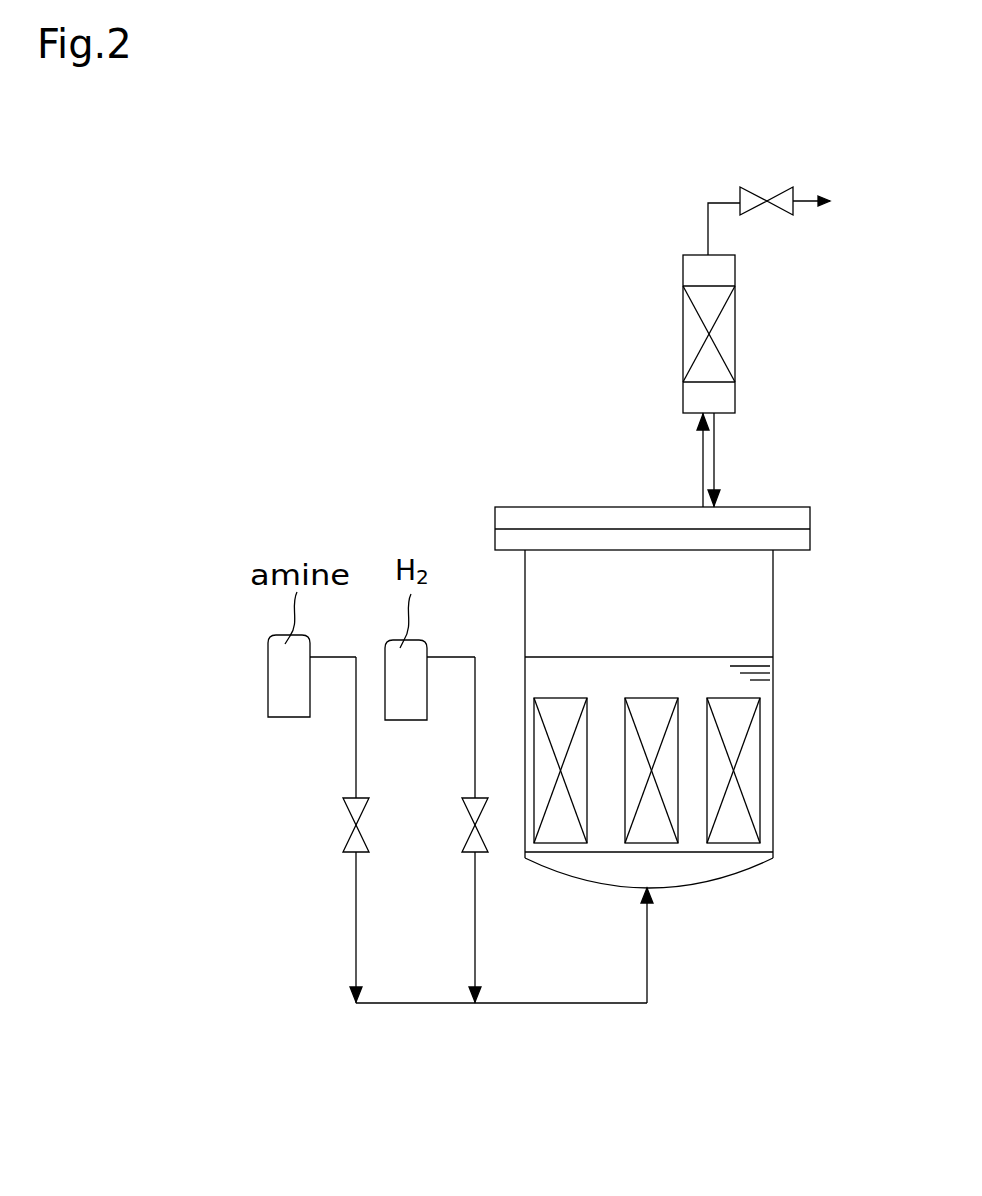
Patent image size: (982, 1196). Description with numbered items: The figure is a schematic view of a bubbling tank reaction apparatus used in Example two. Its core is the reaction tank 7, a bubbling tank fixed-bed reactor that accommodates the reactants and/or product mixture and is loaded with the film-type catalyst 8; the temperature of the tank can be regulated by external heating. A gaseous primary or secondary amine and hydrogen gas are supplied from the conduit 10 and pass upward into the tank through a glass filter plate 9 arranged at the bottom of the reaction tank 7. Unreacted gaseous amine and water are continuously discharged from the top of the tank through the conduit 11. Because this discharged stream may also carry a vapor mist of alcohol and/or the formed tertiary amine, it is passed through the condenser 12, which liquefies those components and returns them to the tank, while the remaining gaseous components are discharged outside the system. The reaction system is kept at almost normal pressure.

The reaction tank 7 is at (773, 627).
The film-type catalyst 8 is at (745, 770).
The filter plate 9 is at (730, 853).
The conduit 10 is at (647, 988).
The conduit 11 is at (715, 457).
The condenser 12 is at (735, 318).